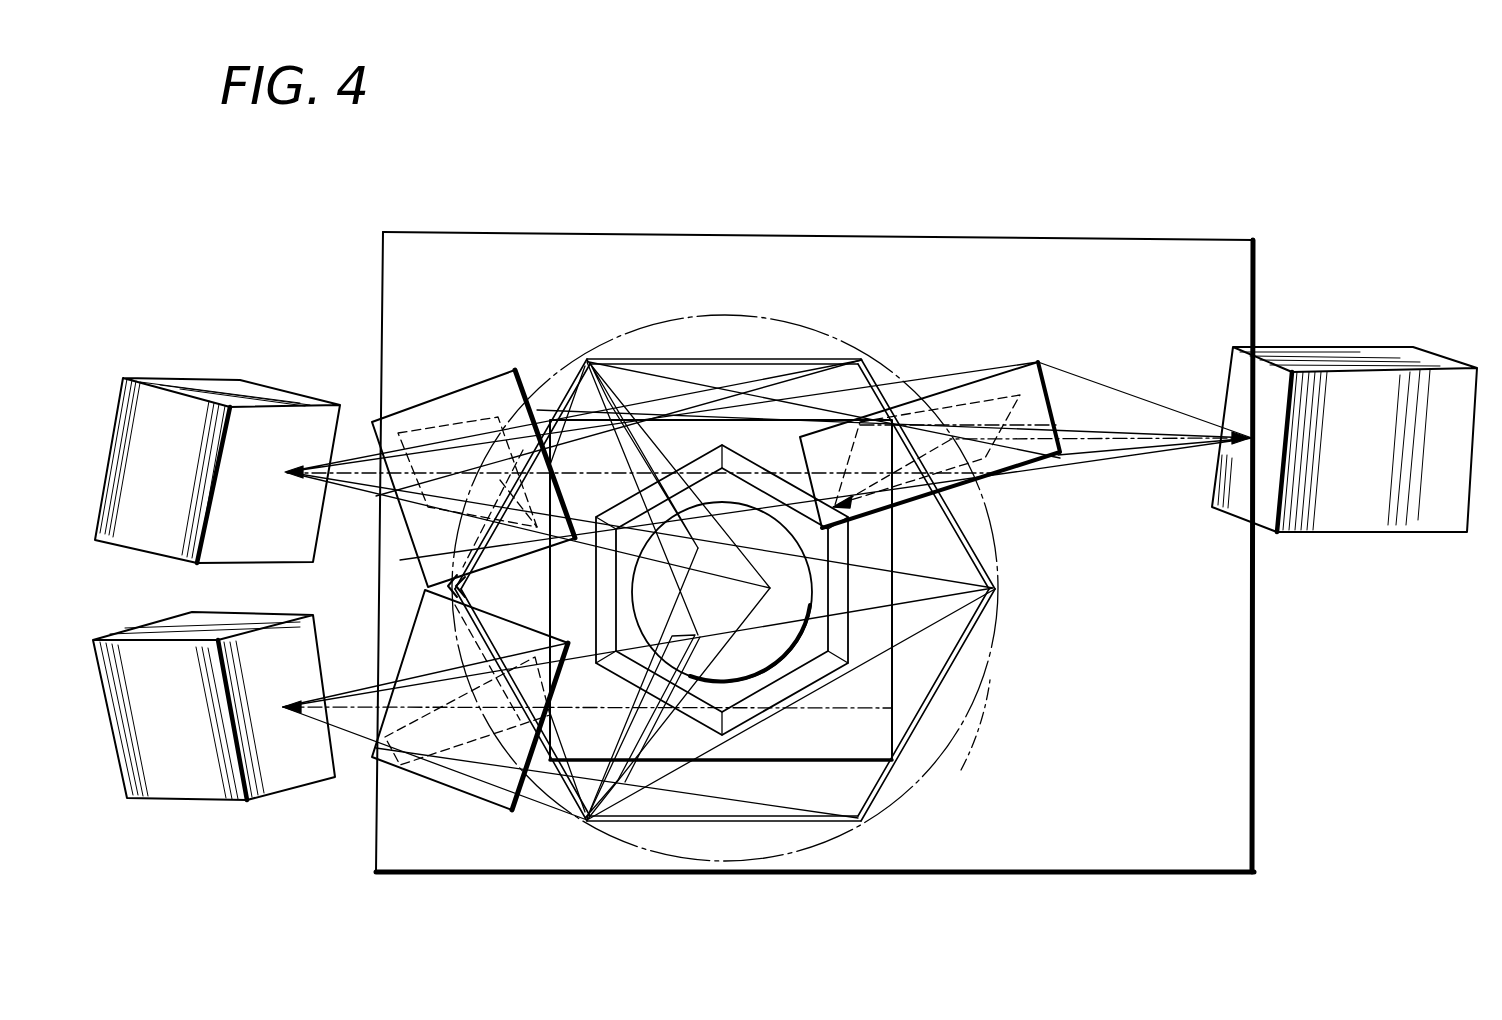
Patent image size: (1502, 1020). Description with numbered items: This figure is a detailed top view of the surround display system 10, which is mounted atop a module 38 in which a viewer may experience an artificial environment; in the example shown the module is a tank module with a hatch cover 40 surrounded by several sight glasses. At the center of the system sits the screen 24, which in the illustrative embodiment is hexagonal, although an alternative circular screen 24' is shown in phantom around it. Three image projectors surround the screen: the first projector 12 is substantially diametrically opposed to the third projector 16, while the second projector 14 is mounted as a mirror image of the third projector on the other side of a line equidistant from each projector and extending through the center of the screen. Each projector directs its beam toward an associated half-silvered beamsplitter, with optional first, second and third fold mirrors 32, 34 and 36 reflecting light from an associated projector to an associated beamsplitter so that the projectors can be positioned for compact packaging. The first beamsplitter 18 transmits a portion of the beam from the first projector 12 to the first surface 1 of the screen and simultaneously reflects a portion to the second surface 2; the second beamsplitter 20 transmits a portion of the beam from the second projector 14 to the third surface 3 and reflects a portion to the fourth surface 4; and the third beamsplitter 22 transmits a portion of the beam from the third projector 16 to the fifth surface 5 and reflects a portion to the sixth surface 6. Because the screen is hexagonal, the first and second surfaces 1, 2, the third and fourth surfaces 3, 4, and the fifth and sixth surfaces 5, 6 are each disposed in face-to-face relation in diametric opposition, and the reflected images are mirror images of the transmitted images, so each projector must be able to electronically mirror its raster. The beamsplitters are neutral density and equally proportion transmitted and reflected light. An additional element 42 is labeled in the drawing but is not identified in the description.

The first surface 1 is at (667, 733).
The second surface 2 is at (750, 354).
The third surface 3 is at (876, 374).
The fourth surface 4 is at (563, 797).
The fifth surface 5 is at (915, 742).
The sixth surface 6 is at (570, 378).
The surround display system 10 is at (1072, 182).
The first image projector 12 is at (1357, 352).
The second image projector 14 is at (210, 385).
The third image projector 16 is at (173, 772).
The first beamsplitter 18 is at (920, 620).
The second beamsplitter 20 is at (610, 402).
The third beamsplitter 22 is at (653, 733).
The screen 24 is at (725, 518).
The alternative circular screen 24' is at (1022, 732).
The first fold mirror 32 is at (990, 378).
The second fold mirror 34 is at (452, 398).
The third fold mirror 36 is at (437, 773).
The module 38 is at (1255, 762).
The hatch cover 40 is at (722, 590).
The plate junction 42 is at (593, 596).